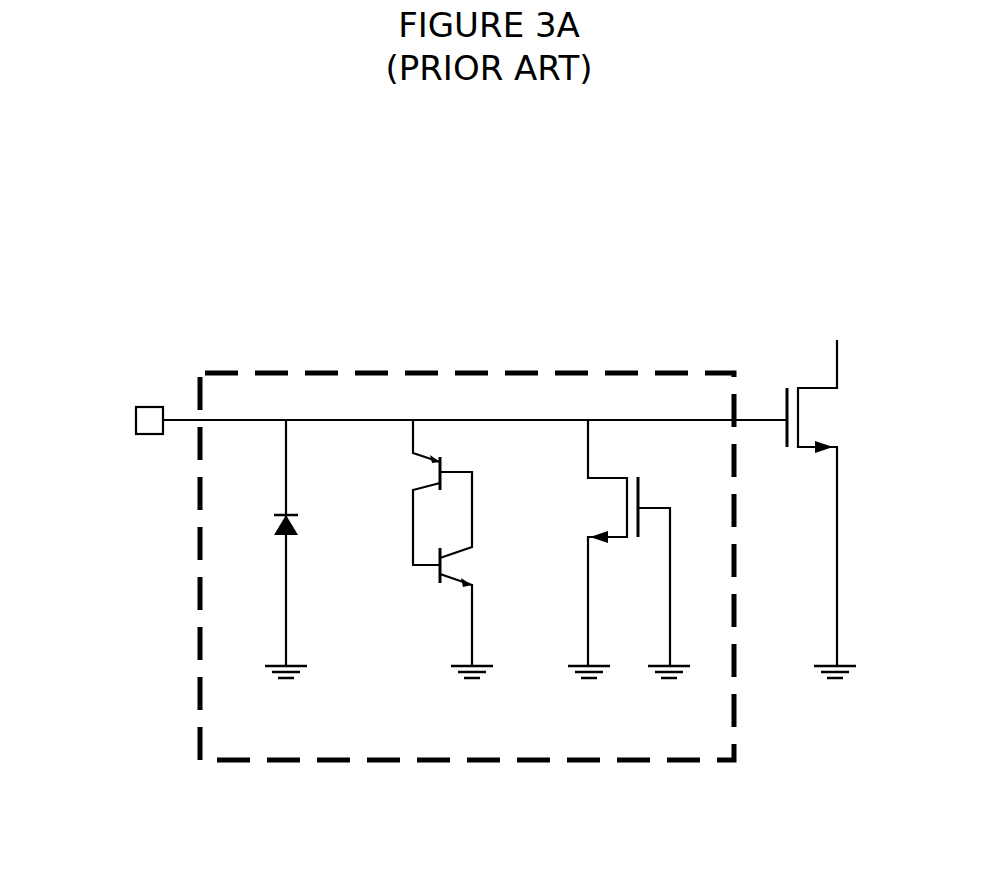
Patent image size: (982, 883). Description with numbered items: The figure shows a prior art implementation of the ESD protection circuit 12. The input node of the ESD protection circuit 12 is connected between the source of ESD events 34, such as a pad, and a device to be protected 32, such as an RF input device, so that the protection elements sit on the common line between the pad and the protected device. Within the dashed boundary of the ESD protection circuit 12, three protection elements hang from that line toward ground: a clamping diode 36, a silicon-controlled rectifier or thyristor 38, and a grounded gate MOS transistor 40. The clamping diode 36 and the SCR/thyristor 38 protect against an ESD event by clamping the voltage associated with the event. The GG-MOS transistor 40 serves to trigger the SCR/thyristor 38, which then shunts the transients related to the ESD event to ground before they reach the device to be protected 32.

The ESD protection circuit 12 is at (180, 583).
The device to be protected 32 is at (797, 358).
The source of ESD events 34 is at (120, 419).
The clamping diode 36 is at (262, 542).
The silicon-controlled rectifier (SCR)/thyristor 38 is at (403, 547).
The grounded gate MOS (GG-MOS) transistor 40 is at (572, 514).